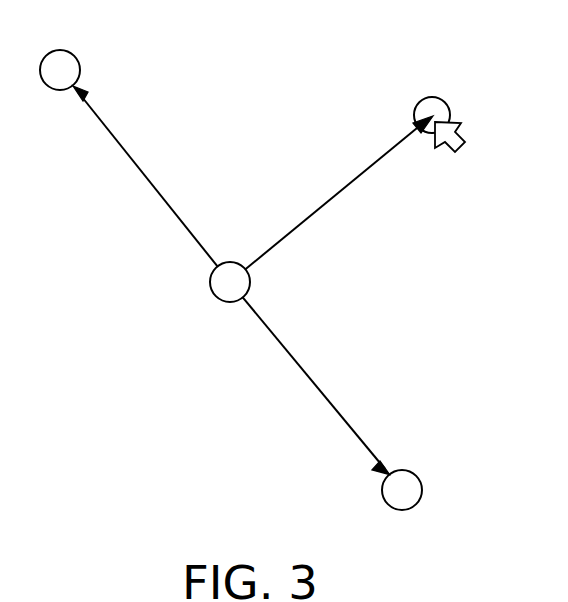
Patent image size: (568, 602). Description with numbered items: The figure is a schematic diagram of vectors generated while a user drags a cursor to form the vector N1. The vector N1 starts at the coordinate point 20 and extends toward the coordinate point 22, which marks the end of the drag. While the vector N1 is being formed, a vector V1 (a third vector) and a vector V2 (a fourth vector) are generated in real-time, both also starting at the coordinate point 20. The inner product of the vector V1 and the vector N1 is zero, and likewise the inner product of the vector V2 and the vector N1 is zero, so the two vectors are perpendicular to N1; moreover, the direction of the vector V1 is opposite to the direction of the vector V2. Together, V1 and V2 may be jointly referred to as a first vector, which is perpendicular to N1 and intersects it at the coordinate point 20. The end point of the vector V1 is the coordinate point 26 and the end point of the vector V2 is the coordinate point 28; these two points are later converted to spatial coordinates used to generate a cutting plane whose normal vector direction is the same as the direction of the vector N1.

The coordinate point 20 is at (215, 295).
The target node selected by cursor 22 is at (448, 107).
The coordinate point 26 is at (72, 51).
The coordinate point 28 is at (383, 503).
The vector V1 is at (150, 180).
The vector V2 is at (317, 382).
The vector N1 is at (305, 217).